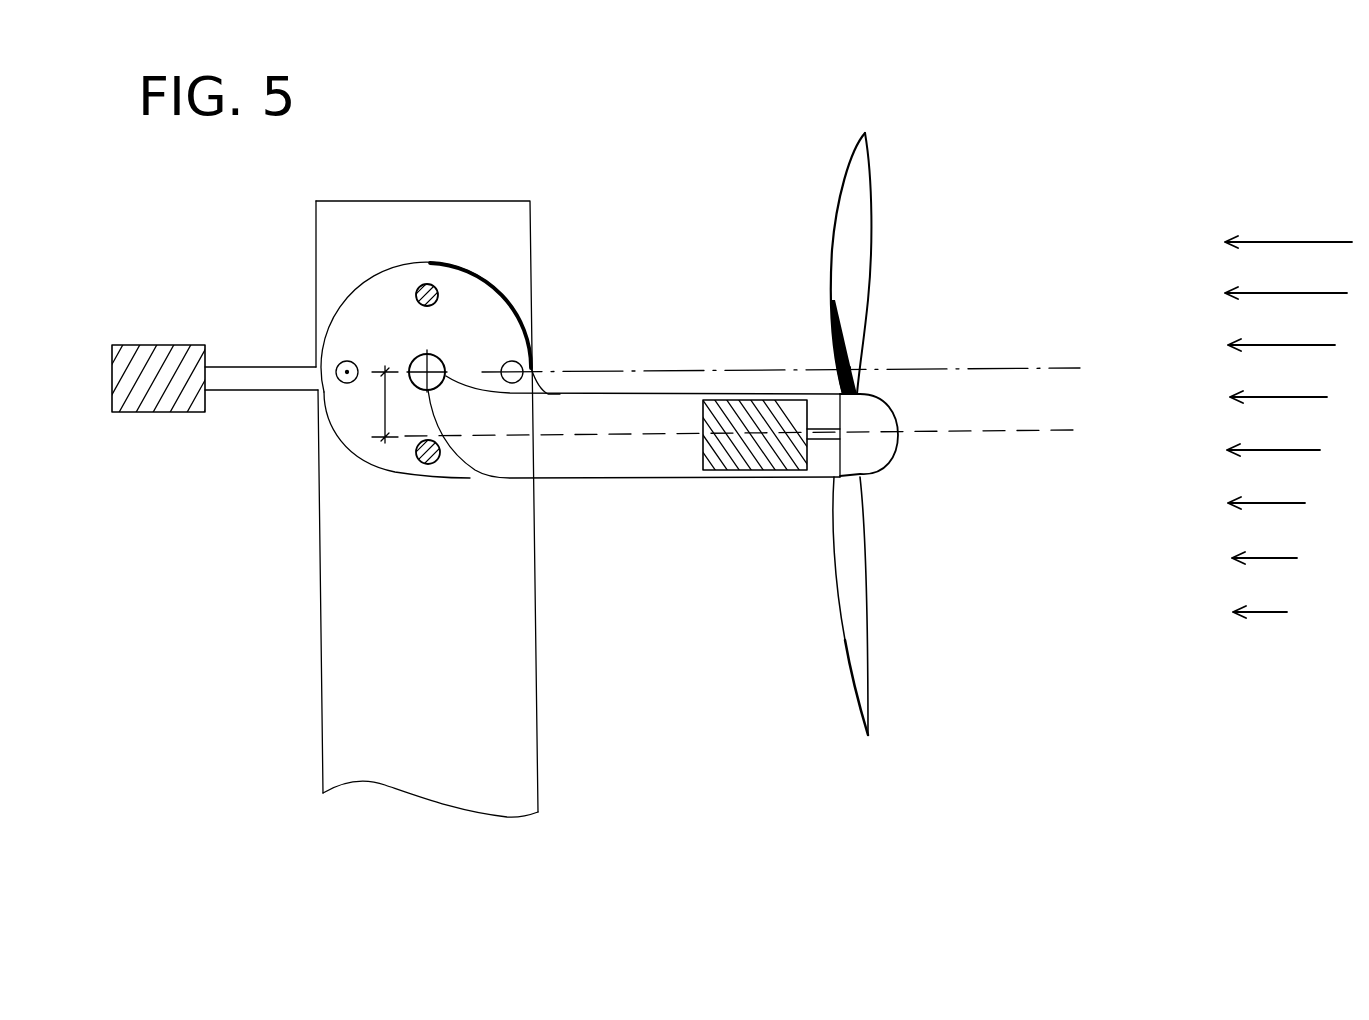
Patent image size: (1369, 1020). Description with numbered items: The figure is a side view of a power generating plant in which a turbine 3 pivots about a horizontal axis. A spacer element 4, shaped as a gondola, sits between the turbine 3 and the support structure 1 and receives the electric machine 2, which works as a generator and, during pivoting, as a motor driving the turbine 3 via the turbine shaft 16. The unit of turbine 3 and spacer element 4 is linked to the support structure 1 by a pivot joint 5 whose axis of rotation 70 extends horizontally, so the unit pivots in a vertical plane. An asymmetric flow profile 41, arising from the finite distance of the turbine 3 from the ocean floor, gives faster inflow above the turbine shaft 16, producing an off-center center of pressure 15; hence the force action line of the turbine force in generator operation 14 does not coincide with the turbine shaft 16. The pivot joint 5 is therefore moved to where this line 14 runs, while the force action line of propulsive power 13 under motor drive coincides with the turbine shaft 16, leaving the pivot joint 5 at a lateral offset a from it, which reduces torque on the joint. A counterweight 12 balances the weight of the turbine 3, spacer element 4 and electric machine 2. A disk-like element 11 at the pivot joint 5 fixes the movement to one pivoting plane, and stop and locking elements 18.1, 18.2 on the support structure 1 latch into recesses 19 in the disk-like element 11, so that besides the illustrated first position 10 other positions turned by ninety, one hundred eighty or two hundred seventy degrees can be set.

The support structure 1 is at (513, 703).
The electric machine 2 is at (753, 460).
The turbine 3 is at (862, 170).
The spacer element 4 is at (653, 463).
The pivot joint 5 is at (437, 360).
The first position 10 is at (884, 787).
The disk-like element 11 is at (352, 313).
The counterweight 12 is at (132, 405).
The force action line of propulsive power 13 is at (997, 430).
The force action line of the turbine force in generator operation 14 is at (995, 368).
The center of pressure 15 is at (848, 367).
The turbine shaft 16 is at (823, 439).
The stop and locking element 18.1 is at (440, 265).
The stop and locking element 18.2 is at (424, 460).
The recesses 19 is at (424, 287).
The flow profile 41 is at (1288, 400).
The axis of rotation 70 is at (425, 355).
The lateral offset a is at (376, 404).